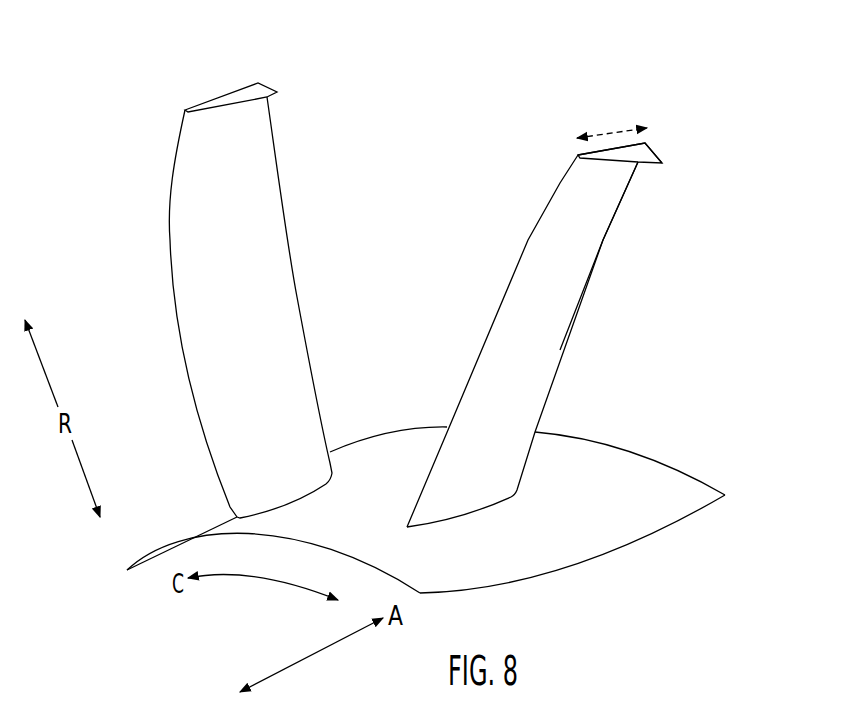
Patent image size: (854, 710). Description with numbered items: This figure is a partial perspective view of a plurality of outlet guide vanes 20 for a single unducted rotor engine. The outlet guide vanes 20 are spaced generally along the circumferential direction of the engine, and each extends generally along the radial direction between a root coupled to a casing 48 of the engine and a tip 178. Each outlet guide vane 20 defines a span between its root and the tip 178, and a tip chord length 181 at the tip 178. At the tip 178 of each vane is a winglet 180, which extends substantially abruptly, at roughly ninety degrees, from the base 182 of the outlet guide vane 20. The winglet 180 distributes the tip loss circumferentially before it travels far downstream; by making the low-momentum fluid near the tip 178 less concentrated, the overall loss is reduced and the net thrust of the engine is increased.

The outlet guide vane 20 is at (288, 308).
The casing 48 is at (643, 475).
The tip 178 is at (626, 121).
The winglet 180 is at (259, 70).
The tip chord length 181 is at (607, 130).
The base 182 is at (587, 238).